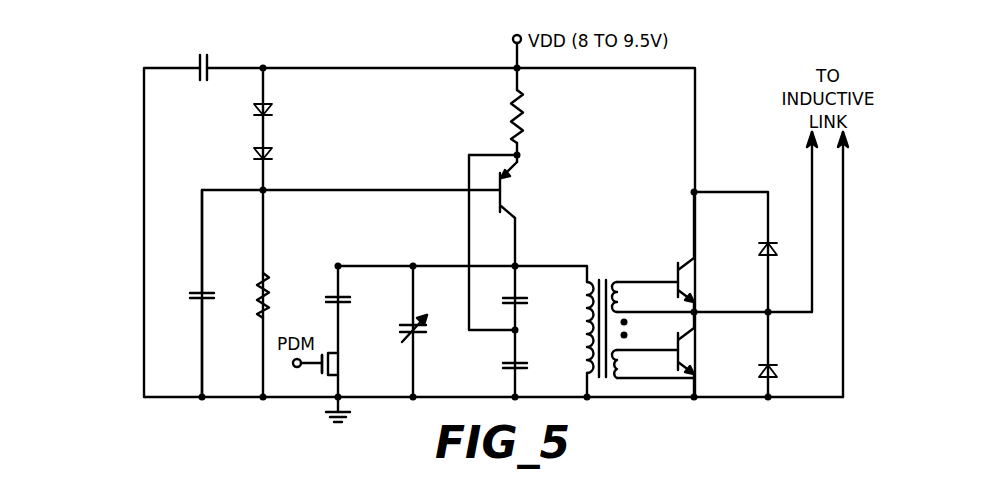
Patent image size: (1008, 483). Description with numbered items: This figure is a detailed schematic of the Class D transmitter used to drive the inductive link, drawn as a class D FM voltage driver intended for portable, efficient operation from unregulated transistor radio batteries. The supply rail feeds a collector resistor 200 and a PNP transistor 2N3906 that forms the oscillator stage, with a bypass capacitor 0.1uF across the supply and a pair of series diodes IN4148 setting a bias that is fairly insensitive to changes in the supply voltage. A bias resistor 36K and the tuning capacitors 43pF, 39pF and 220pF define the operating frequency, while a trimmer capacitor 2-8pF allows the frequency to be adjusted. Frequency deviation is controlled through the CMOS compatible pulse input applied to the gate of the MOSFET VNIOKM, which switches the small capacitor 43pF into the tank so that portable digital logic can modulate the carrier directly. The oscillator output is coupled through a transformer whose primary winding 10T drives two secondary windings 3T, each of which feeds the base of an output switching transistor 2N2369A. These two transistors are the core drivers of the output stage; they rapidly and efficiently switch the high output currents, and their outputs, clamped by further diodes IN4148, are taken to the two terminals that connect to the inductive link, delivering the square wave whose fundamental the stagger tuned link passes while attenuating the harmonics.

The 0.1 microfarad capacitor 0.1uF is at (209, 79).
The 1N4148 diode IN4148 is at (543, 248).
The 36K resistor 36K is at (282, 295).
The 43 pF capacitor 43pF is at (360, 301).
The VN10KM MOSFET VNIOKM is at (363, 364).
The 2-8 pF variable capacitor 2-8pF is at (433, 337).
The 200 ohm resistor 200 is at (535, 116).
The 2N3906 PNP transistor 2N3906 is at (527, 186).
The 39 pF capacitor 39pF is at (533, 288).
The 220 pF capacitor 220pF is at (539, 377).
The 10-turn primary winding 10T is at (571, 327).
The 3-turn secondary winding 3T is at (628, 330).
The 2N2369A NPN transistor 2N2369A is at (722, 294).